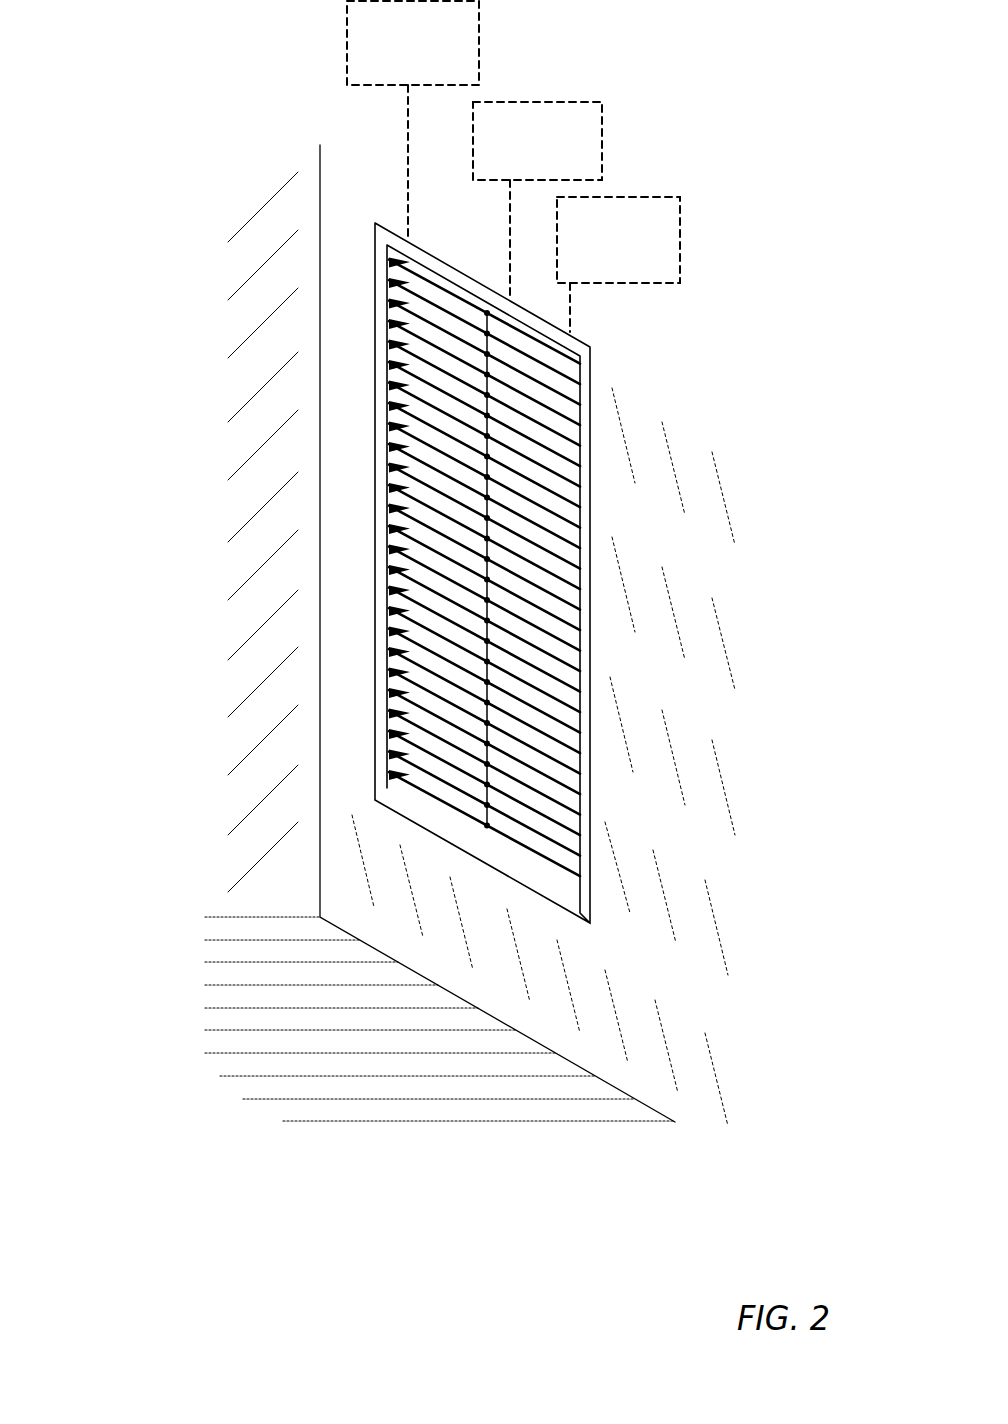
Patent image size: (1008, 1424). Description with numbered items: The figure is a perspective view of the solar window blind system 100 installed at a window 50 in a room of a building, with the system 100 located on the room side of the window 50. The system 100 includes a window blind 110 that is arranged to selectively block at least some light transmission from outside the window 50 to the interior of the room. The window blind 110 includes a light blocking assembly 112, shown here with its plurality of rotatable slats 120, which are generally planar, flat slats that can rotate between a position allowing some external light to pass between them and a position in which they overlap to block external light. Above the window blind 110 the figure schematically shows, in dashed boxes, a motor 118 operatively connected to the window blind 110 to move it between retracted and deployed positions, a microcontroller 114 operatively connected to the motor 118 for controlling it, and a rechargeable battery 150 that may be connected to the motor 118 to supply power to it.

The window 50 is at (633, 600).
The solar window blind system 100 is at (217, 122).
The window blind 110 is at (593, 445).
The light blocking assembly 112 is at (593, 445).
The microcontroller 114 is at (537, 200).
The motor 118 is at (618, 264).
The rotatable slats 120 is at (417, 653).
The rechargeable battery 150 is at (413, 121).